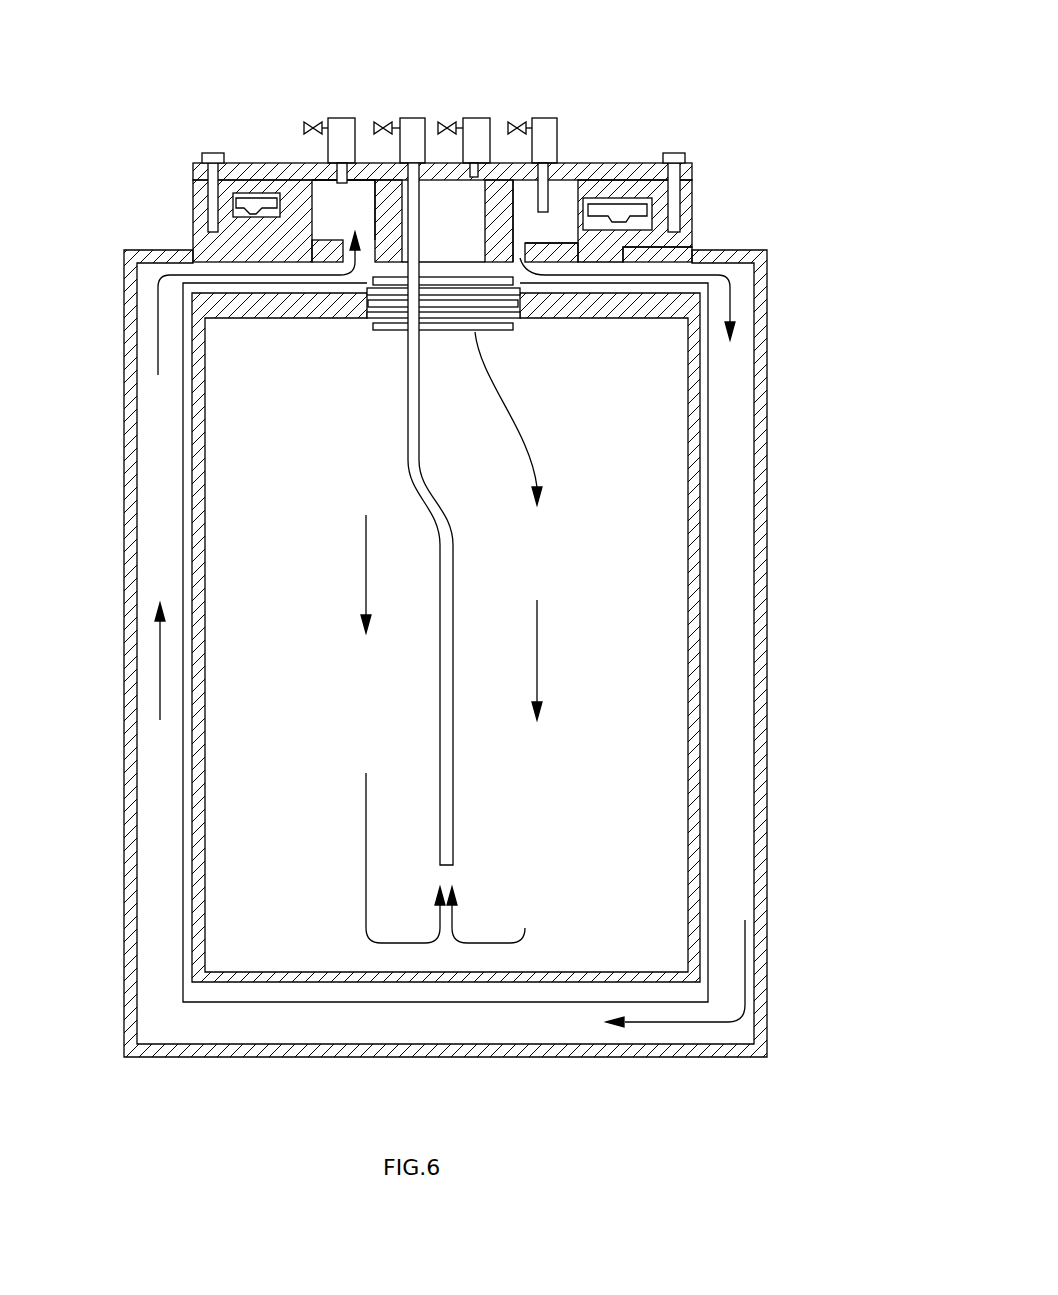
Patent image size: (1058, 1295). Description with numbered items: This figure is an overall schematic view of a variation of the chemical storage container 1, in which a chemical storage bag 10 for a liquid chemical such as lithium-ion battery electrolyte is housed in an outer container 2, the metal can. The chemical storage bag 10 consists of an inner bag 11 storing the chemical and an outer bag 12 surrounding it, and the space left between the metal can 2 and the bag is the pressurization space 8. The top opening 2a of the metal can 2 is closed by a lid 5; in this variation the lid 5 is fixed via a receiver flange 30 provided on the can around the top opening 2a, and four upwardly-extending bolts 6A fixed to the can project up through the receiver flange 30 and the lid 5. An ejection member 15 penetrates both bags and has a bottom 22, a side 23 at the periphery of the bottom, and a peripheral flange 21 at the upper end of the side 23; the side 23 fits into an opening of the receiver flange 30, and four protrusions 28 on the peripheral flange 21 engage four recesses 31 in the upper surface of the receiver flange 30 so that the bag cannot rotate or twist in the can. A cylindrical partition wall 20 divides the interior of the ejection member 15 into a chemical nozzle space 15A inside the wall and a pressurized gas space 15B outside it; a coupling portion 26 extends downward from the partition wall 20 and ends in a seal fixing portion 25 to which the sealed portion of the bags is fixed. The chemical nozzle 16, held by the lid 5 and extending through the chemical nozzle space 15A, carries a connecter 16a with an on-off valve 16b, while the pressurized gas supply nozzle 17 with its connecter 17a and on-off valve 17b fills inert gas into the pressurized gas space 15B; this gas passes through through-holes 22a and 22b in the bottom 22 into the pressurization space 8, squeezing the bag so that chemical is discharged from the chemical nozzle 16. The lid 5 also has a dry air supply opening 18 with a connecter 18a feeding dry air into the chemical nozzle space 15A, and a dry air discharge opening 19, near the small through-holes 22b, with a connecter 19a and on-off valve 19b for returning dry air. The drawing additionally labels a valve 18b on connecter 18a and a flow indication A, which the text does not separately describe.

The chemical storage container 1 is at (133, 99).
The outer container 2 is at (125, 333).
The top opening 2a is at (673, 255).
The lid 5 is at (202, 183).
The upwardly-extending bolts 6A is at (693, 178).
The pressurization space 8 is at (767, 522).
The chemical storage bag 10 is at (835, 670).
The inner bag 11 is at (693, 694).
The outer bag 12 is at (703, 748).
The ejection member 15 is at (337, 262).
The chemical nozzle space 15A is at (445, 240).
The pressurized gas space 15B is at (322, 212).
The chemical nozzle 16 is at (440, 690).
The chemical nozzle connecter 16a is at (412, 125).
The on-off valve 16b is at (385, 120).
The pressurized gas supply nozzle 17 is at (545, 200).
The pressurized gas supply nozzle connecter 17a is at (545, 125).
The on-off valve 17b is at (517, 120).
The dry air supply opening 18 is at (474, 178).
The dry air supply opening connecter 18a is at (476, 125).
The valve 18b is at (447, 120).
The dry air discharge opening 19 is at (322, 188).
The dry air discharge opening connecter 19a is at (332, 125).
The on-off valve 19b is at (308, 120).
The cylindrical partition wall 20 is at (363, 162).
The peripheral flange 21 is at (262, 205).
The bottom 22 is at (345, 285).
The through-holes 22a is at (530, 250).
The through-holes 22b is at (380, 262).
The side 23 is at (270, 240).
The seal fixing portion 25 is at (500, 300).
The coupling portion 26 is at (520, 290).
The protrusions 28 is at (625, 200).
The recesses 31 is at (625, 200).
The receiver flange 30 is at (655, 214).
The gas flow direction A is at (644, 122).